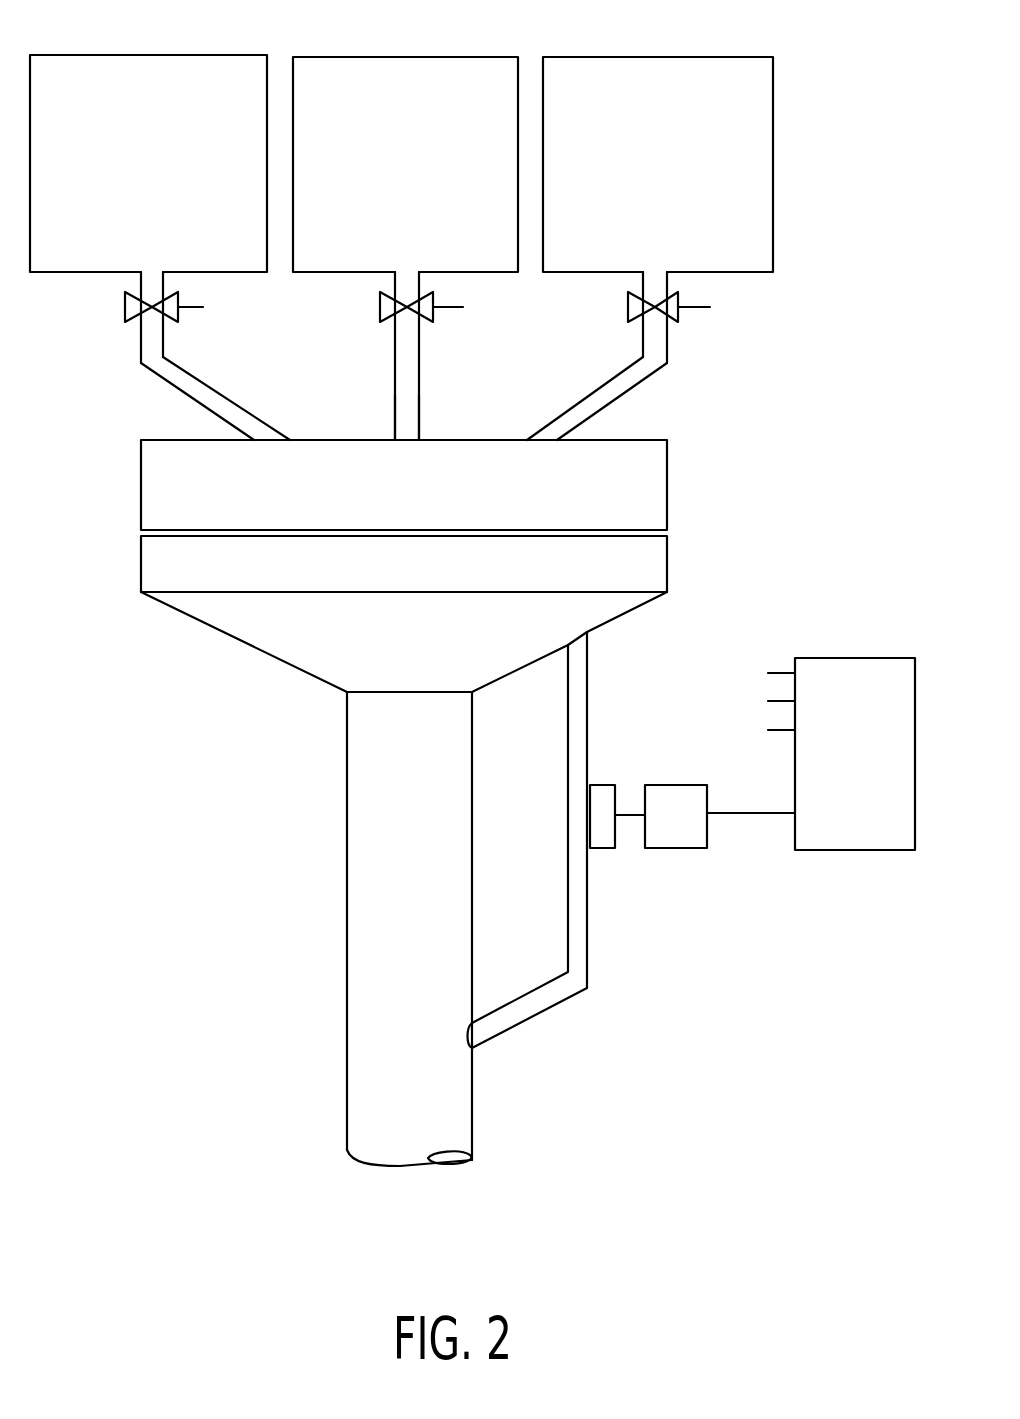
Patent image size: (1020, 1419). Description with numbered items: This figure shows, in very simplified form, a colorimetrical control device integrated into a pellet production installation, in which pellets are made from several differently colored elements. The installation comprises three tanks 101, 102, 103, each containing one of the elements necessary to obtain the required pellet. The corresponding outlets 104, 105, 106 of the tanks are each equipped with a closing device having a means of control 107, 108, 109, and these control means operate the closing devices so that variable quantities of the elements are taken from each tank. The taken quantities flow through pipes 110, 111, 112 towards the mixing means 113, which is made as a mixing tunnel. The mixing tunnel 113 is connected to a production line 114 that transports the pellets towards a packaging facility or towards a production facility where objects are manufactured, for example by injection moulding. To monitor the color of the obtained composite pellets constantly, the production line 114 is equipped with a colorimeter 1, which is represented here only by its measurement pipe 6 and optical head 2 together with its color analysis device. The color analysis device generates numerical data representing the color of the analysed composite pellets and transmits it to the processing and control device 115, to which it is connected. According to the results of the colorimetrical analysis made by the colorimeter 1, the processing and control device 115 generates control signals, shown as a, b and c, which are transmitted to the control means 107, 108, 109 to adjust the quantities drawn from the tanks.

The tank 101 is at (151, 77).
The tank 102 is at (400, 78).
The tank 103 is at (659, 78).
The outlet 104 is at (154, 270).
The outlet 105 is at (409, 272).
The outlet 106 is at (658, 272).
The means of control 107 is at (125, 312).
The means of control 108 is at (380, 312).
The means of control 109 is at (628, 312).
The pipe 110 is at (194, 390).
The pipe 111 is at (405, 394).
The pipe 112 is at (612, 392).
The mixing tunnel 113 is at (646, 481).
The production line 114 is at (338, 645).
The processing and control device 115 is at (850, 832).
The colorimeter 1 is at (692, 757).
The measurement pipe 6 is at (602, 816).
The optical head 2 is at (661, 816).